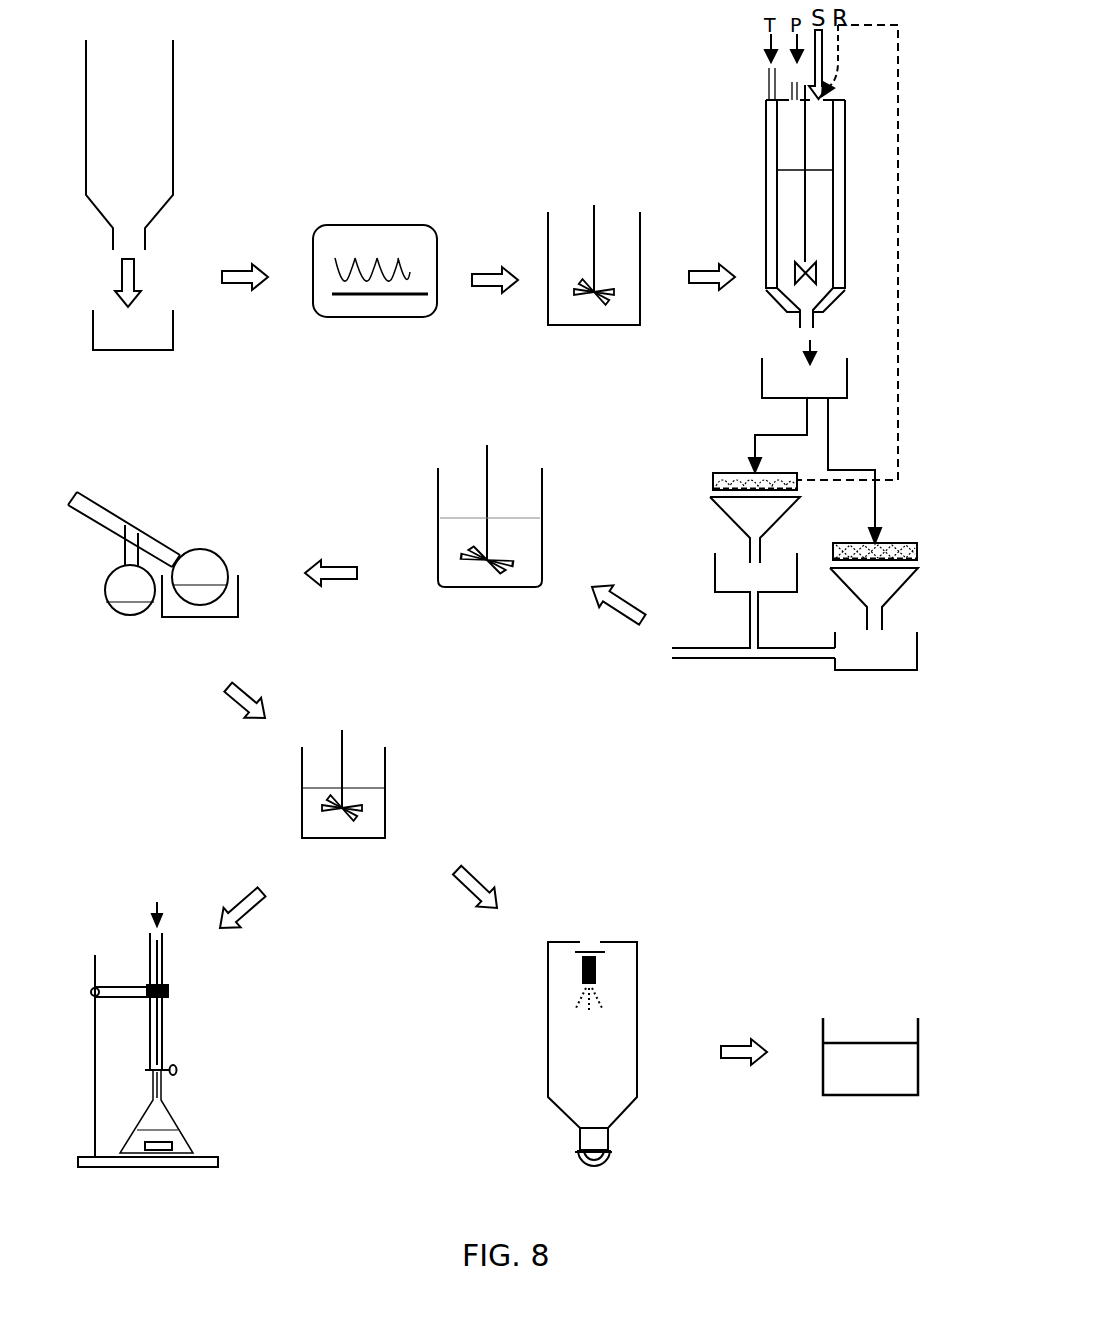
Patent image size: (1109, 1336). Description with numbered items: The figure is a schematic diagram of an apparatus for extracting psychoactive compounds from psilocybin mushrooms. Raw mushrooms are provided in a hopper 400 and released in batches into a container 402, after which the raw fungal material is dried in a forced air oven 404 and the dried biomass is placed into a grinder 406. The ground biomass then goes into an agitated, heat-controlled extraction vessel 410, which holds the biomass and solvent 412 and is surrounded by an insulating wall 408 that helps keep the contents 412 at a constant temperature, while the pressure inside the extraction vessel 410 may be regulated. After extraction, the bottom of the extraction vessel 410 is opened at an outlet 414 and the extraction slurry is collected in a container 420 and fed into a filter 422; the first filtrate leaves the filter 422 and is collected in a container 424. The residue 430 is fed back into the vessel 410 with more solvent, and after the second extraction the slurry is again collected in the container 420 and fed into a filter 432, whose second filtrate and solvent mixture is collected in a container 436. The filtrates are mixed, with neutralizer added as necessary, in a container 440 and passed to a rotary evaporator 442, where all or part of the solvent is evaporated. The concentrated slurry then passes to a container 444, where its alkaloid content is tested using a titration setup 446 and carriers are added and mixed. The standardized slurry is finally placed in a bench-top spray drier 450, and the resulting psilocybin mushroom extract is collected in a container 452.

The hopper 400 is at (175, 92).
The container 402 is at (173, 350).
The forced air oven 404 is at (437, 230).
The grinder 406 is at (640, 228).
The insulating wall 408 is at (768, 127).
The extraction vessel 410 is at (847, 256).
The biomass and solvent 412 is at (790, 170).
The outlet 414 is at (813, 323).
The container 420 is at (762, 378).
The filter 422 is at (713, 473).
The container 424 is at (728, 595).
The residue 430 is at (900, 360).
The filter 432 is at (918, 552).
The container 436 is at (918, 647).
The container 440 is at (438, 480).
The rotary evaporator 442 is at (113, 513).
The container 444 is at (385, 760).
The titration setup 446 is at (163, 1035).
The bench-top spray drier 450 is at (552, 1100).
The container 452 is at (918, 1062).